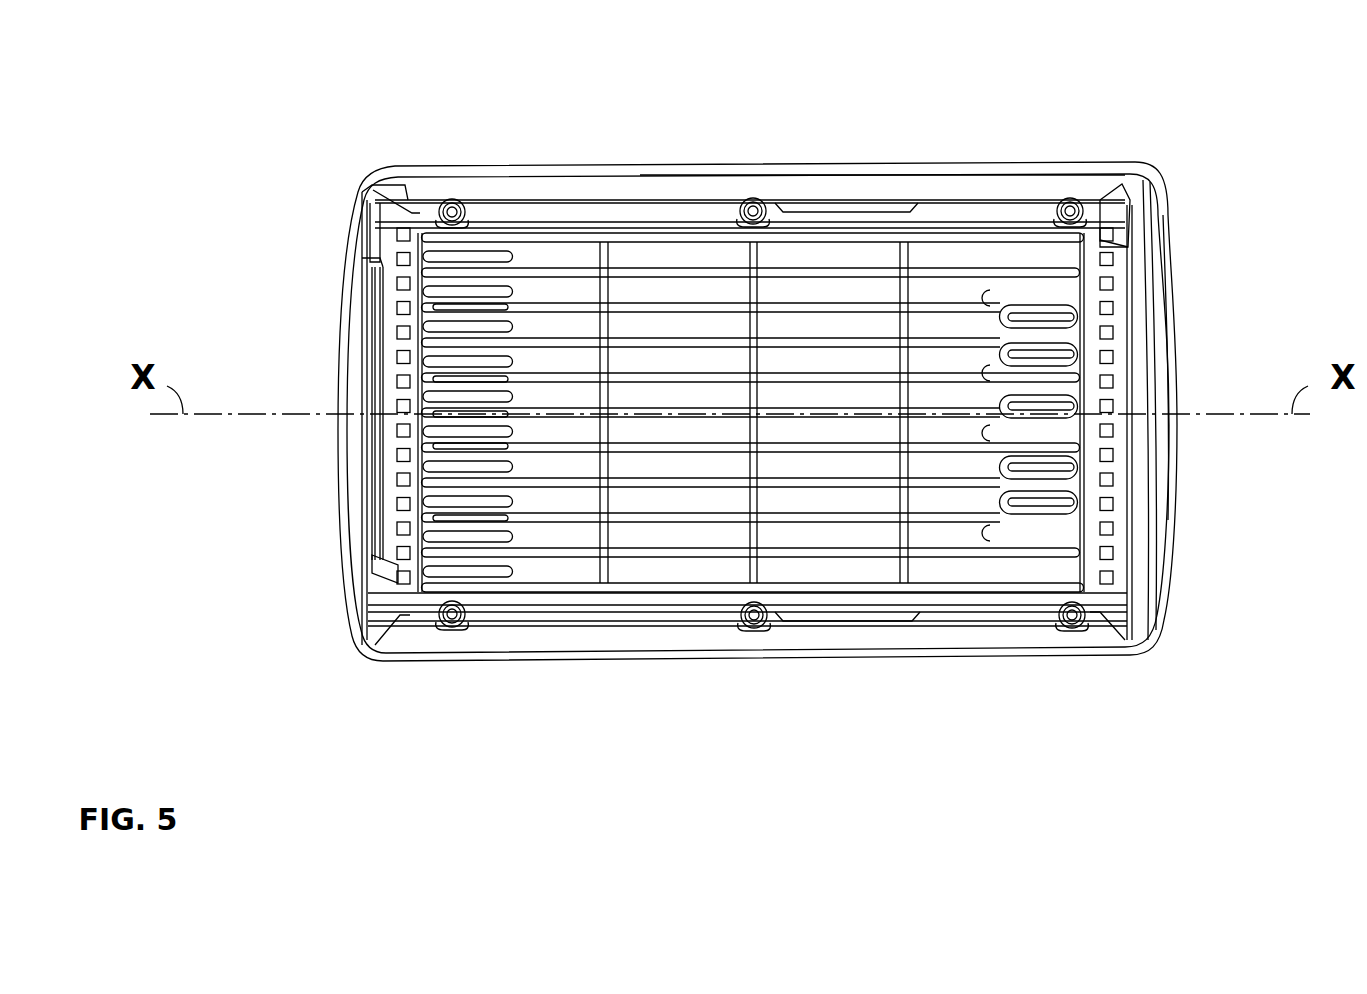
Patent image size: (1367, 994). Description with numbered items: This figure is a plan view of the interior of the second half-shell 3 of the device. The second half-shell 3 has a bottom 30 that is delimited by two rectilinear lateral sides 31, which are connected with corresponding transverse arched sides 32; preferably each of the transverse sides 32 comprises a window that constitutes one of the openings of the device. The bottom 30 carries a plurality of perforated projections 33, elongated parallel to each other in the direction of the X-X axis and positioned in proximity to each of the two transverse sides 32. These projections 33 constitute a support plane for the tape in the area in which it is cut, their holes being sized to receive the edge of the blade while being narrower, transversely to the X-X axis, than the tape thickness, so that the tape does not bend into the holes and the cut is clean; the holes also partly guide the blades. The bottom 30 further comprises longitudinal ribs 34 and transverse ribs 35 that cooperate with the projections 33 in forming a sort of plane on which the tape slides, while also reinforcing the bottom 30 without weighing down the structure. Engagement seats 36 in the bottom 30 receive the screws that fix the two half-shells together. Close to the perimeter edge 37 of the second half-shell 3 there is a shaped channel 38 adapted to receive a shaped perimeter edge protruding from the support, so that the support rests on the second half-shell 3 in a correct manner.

The second half-shell 3 is at (1142, 150).
The bottom 30 is at (577, 257).
The rectilinear lateral sides 31 is at (915, 165).
The transverse arched sides 32 is at (350, 458).
The perforated projections 33 is at (440, 411).
The longitudinal ribs 34 is at (847, 443).
The transverse ribs 35 is at (753, 503).
The engagement seats 36 is at (445, 200).
The perimeter edge 37 is at (848, 162).
The shaped channel 38 is at (565, 222).